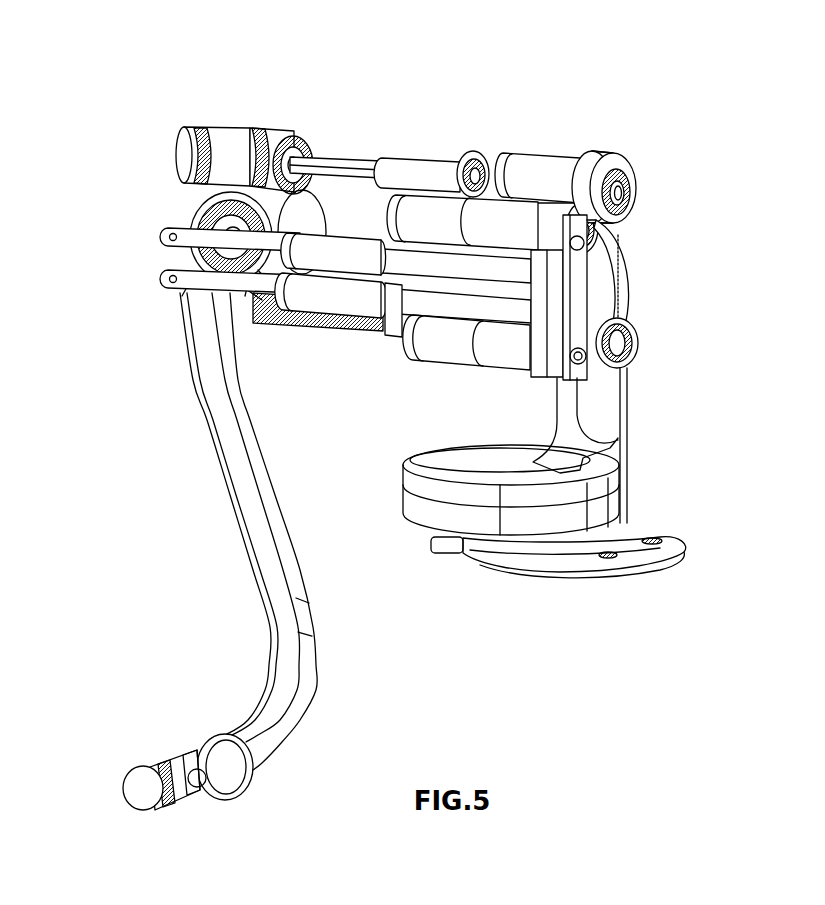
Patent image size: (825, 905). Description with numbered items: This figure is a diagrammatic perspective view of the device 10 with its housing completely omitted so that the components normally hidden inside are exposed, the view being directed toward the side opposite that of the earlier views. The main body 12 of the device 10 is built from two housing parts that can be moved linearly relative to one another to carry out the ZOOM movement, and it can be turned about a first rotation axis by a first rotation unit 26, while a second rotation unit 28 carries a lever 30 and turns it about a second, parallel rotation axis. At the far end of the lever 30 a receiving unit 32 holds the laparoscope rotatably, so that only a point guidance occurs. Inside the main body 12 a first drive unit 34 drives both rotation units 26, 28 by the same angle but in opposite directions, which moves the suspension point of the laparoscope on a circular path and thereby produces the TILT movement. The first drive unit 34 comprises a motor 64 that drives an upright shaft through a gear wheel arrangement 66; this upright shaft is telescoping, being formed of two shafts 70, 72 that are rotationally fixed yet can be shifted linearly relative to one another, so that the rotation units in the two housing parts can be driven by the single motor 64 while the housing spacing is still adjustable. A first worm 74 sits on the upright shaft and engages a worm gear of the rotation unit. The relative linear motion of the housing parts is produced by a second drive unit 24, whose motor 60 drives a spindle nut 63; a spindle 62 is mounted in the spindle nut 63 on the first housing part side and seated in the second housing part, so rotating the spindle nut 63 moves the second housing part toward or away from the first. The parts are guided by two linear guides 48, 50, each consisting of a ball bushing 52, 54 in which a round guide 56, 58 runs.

The device 10 is at (437, 421).
The main body 12 is at (408, 417).
The second drive unit 24 is at (637, 353).
The first rotation unit 26 is at (635, 262).
The second rotation unit 28 is at (162, 157).
The lever 30 is at (230, 450).
The receiving unit 32 is at (210, 717).
The first drive unit 34 is at (640, 228).
The linear guide 48 is at (150, 235).
The linear guide 50 is at (150, 275).
The ball bushing 52 is at (342, 250).
The ball bushing 54 is at (355, 300).
The round guide 56 is at (260, 195).
The round guide 58 is at (243, 303).
The motor 60 is at (475, 353).
The spindle 62 is at (310, 323).
The spindle nut 63 is at (390, 327).
The motor 64 is at (430, 207).
The gear wheel arrangement 66 is at (603, 147).
The shaft 70 is at (413, 173).
The shaft 72 is at (355, 157).
The first worm 74 is at (527, 163).